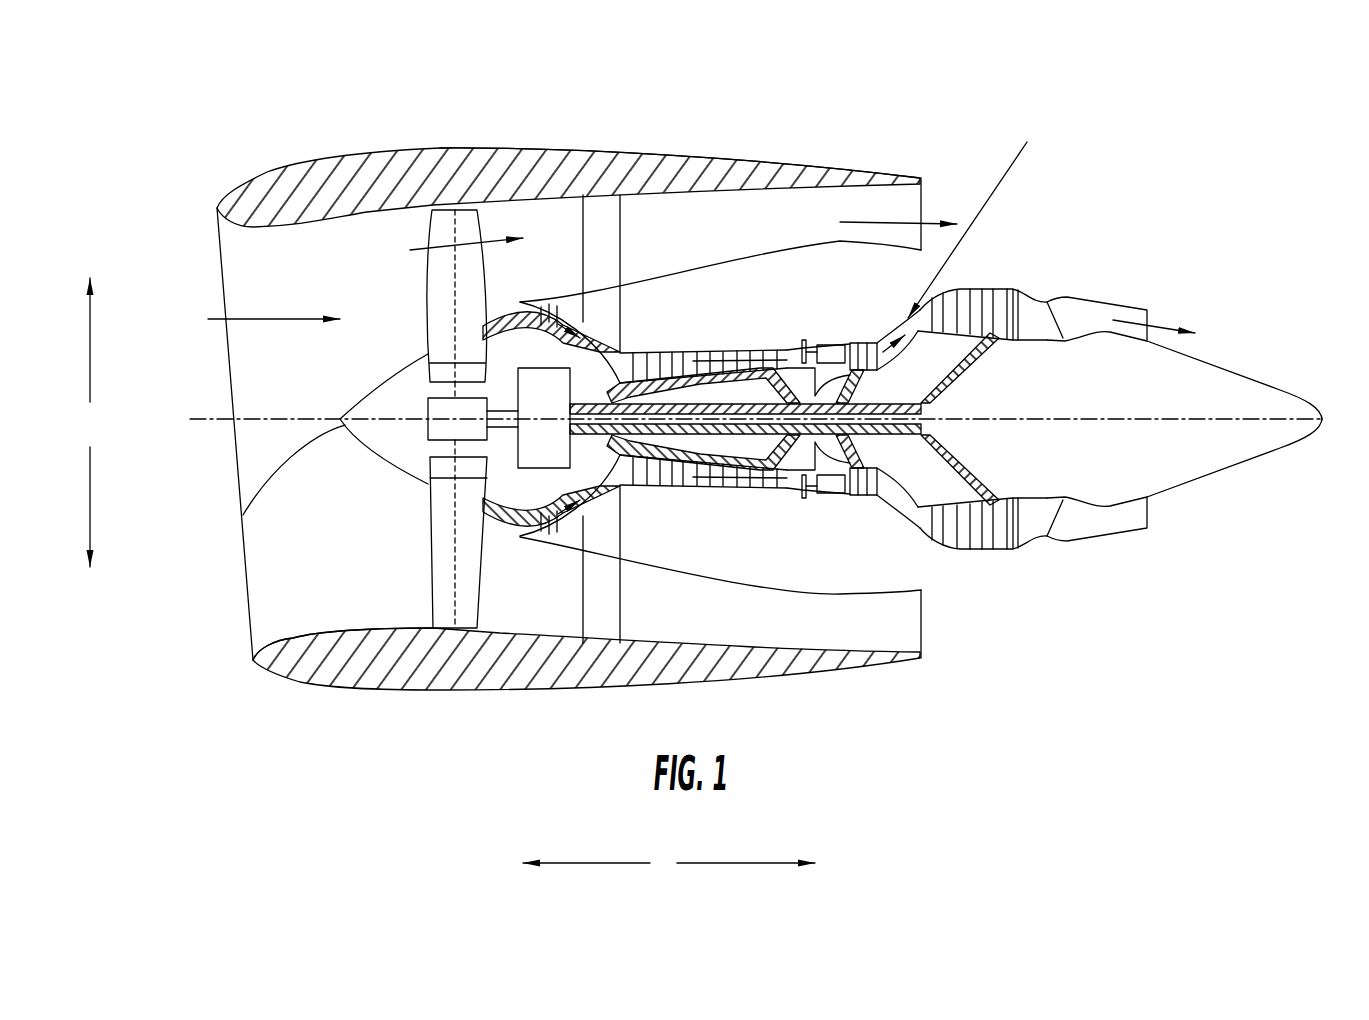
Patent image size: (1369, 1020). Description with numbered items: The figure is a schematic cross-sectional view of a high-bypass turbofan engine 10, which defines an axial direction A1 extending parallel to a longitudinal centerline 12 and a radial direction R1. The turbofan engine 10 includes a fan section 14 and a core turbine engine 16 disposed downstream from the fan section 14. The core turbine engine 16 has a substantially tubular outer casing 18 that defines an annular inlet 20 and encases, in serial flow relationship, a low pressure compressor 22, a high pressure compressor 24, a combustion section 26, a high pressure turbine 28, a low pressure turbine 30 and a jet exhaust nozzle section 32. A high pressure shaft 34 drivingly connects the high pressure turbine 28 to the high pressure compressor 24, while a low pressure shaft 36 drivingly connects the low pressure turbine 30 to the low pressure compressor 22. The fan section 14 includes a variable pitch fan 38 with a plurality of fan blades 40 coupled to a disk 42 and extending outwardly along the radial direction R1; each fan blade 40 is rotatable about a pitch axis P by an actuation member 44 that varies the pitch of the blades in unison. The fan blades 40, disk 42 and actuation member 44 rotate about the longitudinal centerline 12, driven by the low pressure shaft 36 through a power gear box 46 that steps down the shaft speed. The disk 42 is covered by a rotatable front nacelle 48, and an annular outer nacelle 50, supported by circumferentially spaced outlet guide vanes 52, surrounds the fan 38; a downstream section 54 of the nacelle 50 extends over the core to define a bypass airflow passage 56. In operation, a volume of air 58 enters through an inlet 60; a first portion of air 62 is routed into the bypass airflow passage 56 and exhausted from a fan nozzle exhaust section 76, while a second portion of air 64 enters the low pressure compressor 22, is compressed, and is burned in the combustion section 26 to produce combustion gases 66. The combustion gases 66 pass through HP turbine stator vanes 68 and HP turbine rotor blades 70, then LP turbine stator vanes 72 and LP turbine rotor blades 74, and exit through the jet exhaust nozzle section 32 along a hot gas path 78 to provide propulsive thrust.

The turbofan engine 10 is at (754, 413).
The longitudinal centerline 12 is at (1087, 418).
The fan section 14 is at (599, 156).
The core turbine engine 16 is at (902, 385).
The outer casing 18 is at (780, 586).
The annular inlet 20 is at (522, 530).
The low pressure compressor 22 is at (572, 492).
The high pressure compressor 24 is at (651, 474).
The combustion section 26 is at (820, 482).
The high pressure turbine 28 is at (910, 490).
The low pressure turbine 30 is at (1003, 542).
The jet exhaust nozzle section 32 is at (1065, 525).
The high pressure shaft 34 is at (850, 384).
The low pressure shaft 36 is at (950, 384).
The variable pitch fan 38 is at (397, 472).
The fan blades 40 is at (430, 570).
The disk 42 is at (445, 374).
The actuation member 44 is at (430, 402).
The power gear box 46 is at (560, 393).
The front nacelle 48 is at (243, 515).
The outer nacelle 50 is at (554, 677).
The outlet guide vanes 52 is at (620, 230).
The downstream section of the nacelle 54 is at (843, 167).
The bypass airflow passage 56 is at (719, 246).
The volume of air 58 is at (270, 318).
The inlet 60 is at (248, 640).
The first portion of air 62 is at (450, 243).
The second portion of air 64 is at (513, 303).
The combustion gases 66 is at (967, 297).
The HP turbine stator vanes 68 is at (833, 494).
The HP turbine rotor blades 70 is at (867, 467).
The LP turbine stator vanes 72 is at (923, 535).
The LP turbine rotor blades 74 is at (940, 535).
The fan nozzle exhaust section 76 is at (910, 207).
The hot gas path 78 is at (974, 214).
The pitch axis P is at (457, 226).
The radial direction R1 is at (85, 422).
The axial direction A1 is at (669, 862).